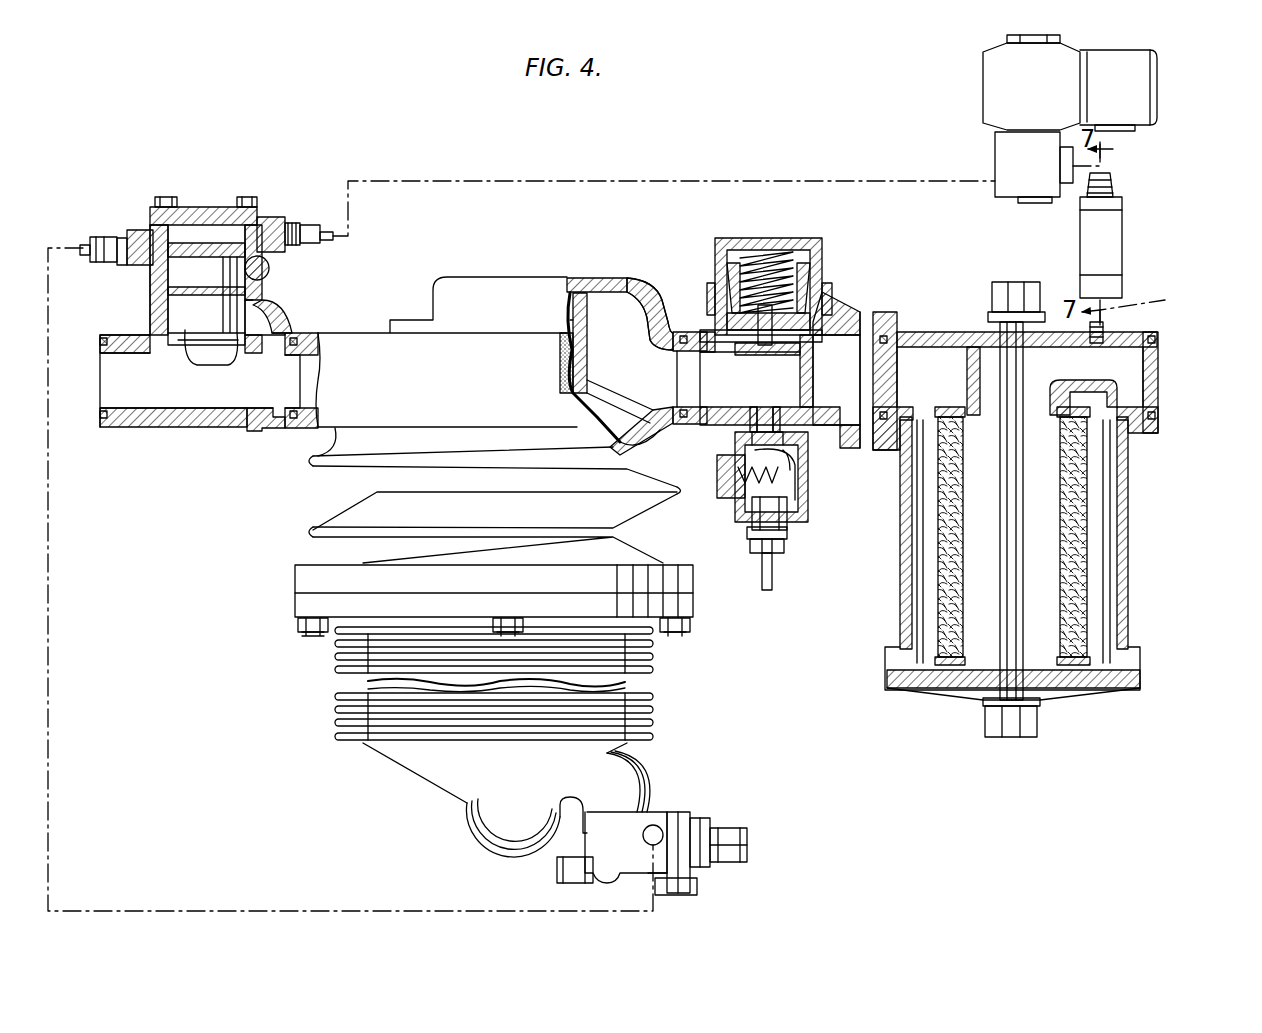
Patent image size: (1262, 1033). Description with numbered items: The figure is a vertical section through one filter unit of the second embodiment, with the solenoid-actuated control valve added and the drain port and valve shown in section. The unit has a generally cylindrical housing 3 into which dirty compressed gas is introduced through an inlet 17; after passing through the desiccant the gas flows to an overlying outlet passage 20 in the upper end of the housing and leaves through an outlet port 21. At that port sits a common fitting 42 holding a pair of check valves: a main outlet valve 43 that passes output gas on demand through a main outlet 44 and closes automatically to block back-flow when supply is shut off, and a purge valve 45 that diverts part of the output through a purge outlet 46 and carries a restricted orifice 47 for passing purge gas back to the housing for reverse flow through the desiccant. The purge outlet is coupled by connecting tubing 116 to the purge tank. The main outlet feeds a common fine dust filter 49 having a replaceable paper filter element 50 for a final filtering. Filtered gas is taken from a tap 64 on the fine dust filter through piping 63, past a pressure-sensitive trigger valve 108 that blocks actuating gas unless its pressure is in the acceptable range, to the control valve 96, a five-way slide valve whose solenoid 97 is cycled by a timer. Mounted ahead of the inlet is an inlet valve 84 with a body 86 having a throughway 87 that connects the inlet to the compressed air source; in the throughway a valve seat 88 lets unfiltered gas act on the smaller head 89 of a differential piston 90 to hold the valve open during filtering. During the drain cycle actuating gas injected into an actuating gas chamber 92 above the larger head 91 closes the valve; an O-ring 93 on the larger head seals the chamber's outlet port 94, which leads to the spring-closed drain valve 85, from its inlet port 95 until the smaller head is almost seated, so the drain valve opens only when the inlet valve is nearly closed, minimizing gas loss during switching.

The housing 3 is at (623, 278).
The inlet 17 is at (310, 377).
The outlet passage 20 is at (634, 318).
The outlet port 21 is at (663, 387).
The fitting 42 is at (833, 305).
The main outlet valve 43 is at (810, 345).
The main outlet 44 is at (847, 385).
The purge valve 45 is at (790, 483).
The purge outlet 46 is at (765, 418).
The restricted orifice 47 is at (768, 452).
The fine dust filter 49 is at (1128, 562).
The paper filter element 50 is at (963, 517).
The piping 63 is at (1144, 315).
The tap 64 is at (1073, 323).
The inlet valve 84 is at (217, 207).
The drain valve 85 is at (667, 812).
The body 86 is at (158, 282).
The throughway 87 is at (142, 398).
The valve seat 88 is at (183, 330).
The smaller head 89 is at (283, 333).
The differential piston 90 is at (266, 308).
The larger head 91 is at (237, 240).
The actuating gas chamber 92 is at (180, 230).
The O-ring 93 is at (170, 292).
The outlet port 94 is at (150, 230).
The inlet port 95 is at (266, 268).
The control valve 96 is at (992, 153).
The solenoid 97 is at (980, 73).
The trigger valve 108 is at (1128, 250).
The connecting tubing 116 is at (772, 585).